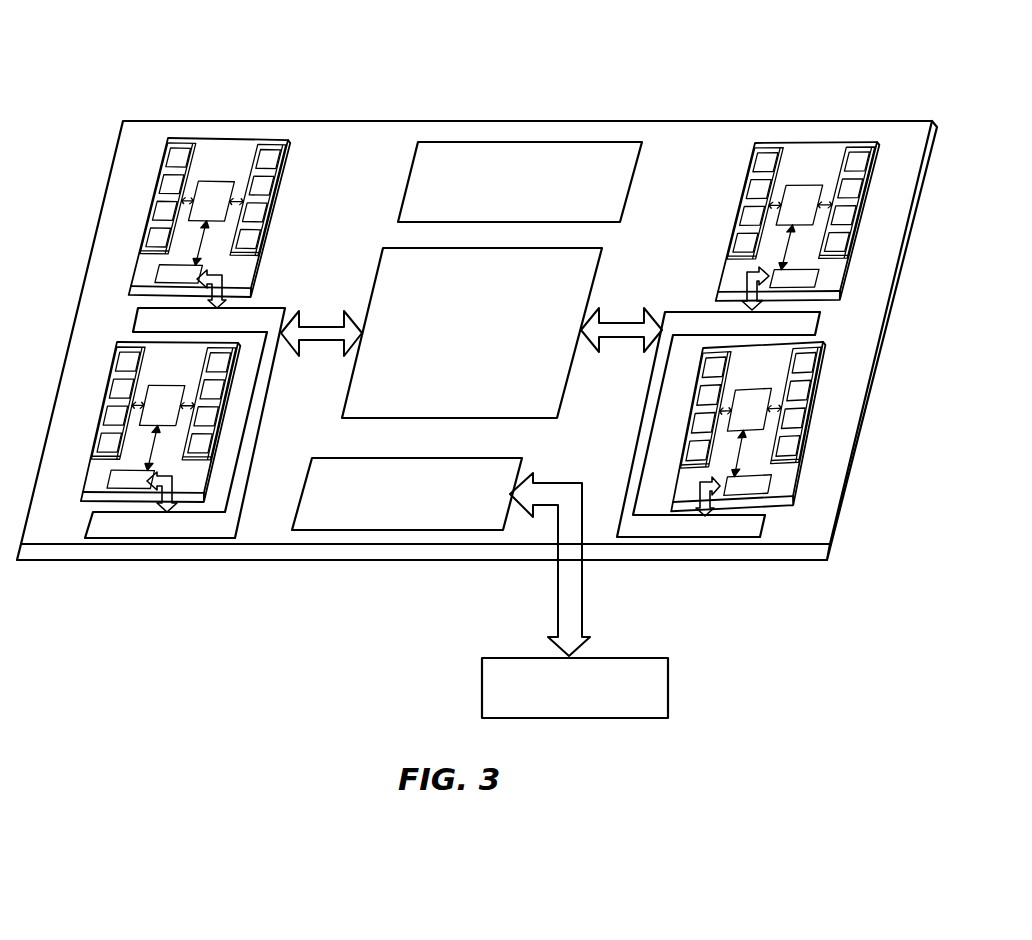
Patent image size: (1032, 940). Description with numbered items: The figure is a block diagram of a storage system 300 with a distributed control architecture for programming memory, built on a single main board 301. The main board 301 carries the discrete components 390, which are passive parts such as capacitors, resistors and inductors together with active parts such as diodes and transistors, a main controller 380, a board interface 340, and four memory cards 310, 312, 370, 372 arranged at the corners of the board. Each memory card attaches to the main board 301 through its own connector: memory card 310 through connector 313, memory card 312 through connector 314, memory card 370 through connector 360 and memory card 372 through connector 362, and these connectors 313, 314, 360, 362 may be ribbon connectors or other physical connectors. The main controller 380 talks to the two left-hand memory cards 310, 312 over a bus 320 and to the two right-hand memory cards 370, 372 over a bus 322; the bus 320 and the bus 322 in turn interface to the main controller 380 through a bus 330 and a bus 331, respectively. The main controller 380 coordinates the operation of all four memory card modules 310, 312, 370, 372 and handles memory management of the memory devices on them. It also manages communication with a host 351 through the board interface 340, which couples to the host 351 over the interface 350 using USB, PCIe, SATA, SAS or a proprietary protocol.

The storage system 300 is at (192, 90).
The main board 301 is at (348, 121).
The memory card 310 is at (153, 197).
The memory card 312 is at (82, 487).
The connector 313 is at (207, 302).
The connector 314 is at (160, 503).
The bus 320 is at (235, 528).
The bus 322 is at (750, 537).
The bus 330 is at (328, 347).
The bus 331 is at (630, 340).
The board interface 340 is at (455, 530).
The interface 350 is at (585, 587).
The host 351 is at (668, 673).
The connector 360 is at (758, 305).
The connector 362 is at (715, 511).
The memory card 370 is at (767, 143).
The memory card 372 is at (800, 463).
The main controller 380 is at (602, 265).
The discrete components 390 is at (453, 121).